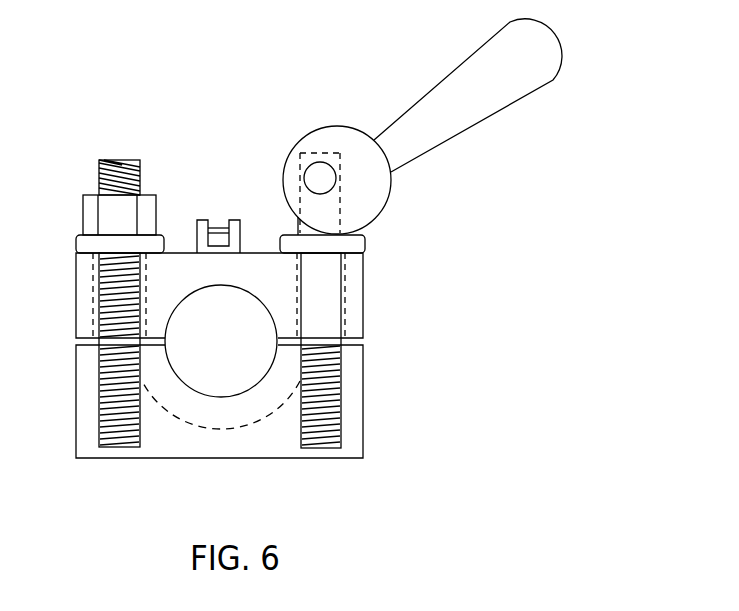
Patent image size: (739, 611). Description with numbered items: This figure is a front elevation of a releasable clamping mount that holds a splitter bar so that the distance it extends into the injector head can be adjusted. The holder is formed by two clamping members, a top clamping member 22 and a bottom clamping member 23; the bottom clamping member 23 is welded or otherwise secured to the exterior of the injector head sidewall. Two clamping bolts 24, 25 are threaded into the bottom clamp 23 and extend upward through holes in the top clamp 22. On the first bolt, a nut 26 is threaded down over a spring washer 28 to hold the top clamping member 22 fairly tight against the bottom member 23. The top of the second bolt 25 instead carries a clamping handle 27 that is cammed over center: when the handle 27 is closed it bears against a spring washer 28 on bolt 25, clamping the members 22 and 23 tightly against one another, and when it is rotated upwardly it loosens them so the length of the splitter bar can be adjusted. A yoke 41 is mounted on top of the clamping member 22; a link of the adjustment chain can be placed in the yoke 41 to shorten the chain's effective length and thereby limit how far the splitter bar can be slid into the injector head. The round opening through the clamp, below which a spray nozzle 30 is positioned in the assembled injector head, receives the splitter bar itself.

The top clamping member 22 is at (256, 283).
The bottom clamping member 23 is at (250, 449).
The clamping bolt 24 is at (112, 160).
The clamping bolt 25 is at (348, 397).
The nut 26 is at (84, 213).
The clamping handle 27 is at (470, 58).
The spring washer 28 is at (76, 244).
The spray nozzle 30 is at (205, 351).
The yoke 41 is at (199, 222).